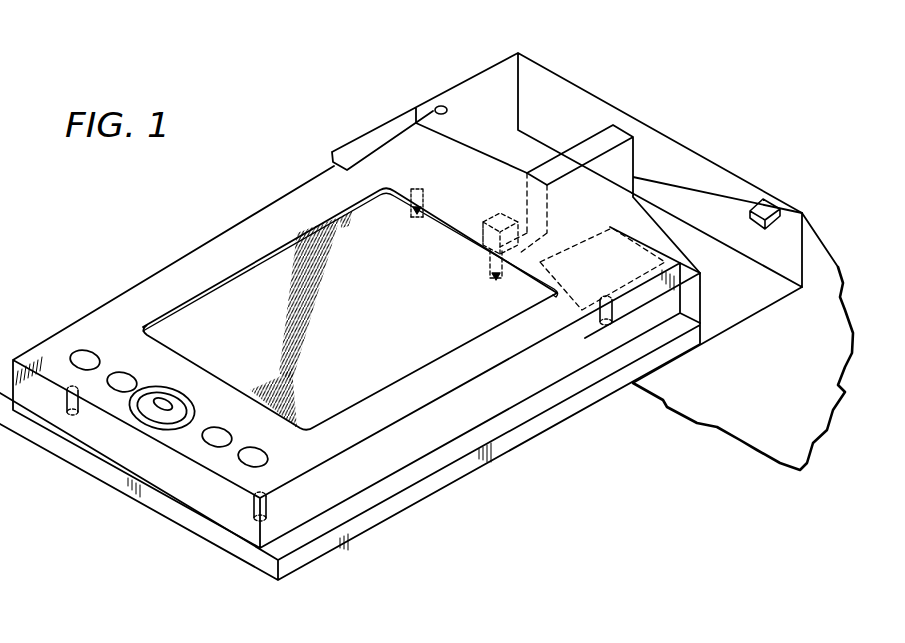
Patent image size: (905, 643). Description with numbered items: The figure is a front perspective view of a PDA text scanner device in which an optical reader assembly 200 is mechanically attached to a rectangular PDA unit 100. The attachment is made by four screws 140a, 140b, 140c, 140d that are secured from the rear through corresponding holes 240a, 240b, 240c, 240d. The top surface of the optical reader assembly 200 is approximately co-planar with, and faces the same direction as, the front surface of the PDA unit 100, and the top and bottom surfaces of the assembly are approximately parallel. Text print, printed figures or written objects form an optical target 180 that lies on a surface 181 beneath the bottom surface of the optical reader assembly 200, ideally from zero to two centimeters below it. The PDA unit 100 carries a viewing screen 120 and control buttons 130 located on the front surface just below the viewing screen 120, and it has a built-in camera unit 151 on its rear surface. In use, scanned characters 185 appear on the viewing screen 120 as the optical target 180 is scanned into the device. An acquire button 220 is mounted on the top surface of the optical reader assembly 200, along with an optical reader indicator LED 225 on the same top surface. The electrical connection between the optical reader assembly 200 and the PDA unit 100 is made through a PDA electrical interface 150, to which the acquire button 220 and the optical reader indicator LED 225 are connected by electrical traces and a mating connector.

The PDA unit 100 is at (190, 258).
The viewing screen 120 is at (417, 338).
The control buttons 130 is at (279, 456).
The screw 140a is at (411, 211).
The screw 140b is at (614, 324).
The screw 140c is at (250, 508).
The screw 140d is at (66, 407).
The hole 240a is at (411, 190).
The hole 240b is at (600, 325).
The hole 240c is at (268, 507).
The hole 240d is at (80, 413).
The PDA electrical interface 150 is at (616, 218).
The built-in camera unit 151 is at (482, 232).
The optical target 180 is at (480, 128).
The surface 181 is at (795, 463).
The scanned characters 185 is at (412, 270).
The optical reader assembly 200 is at (508, 455).
The acquire button 220 is at (773, 206).
The optical reader indicator LED 225 is at (435, 106).